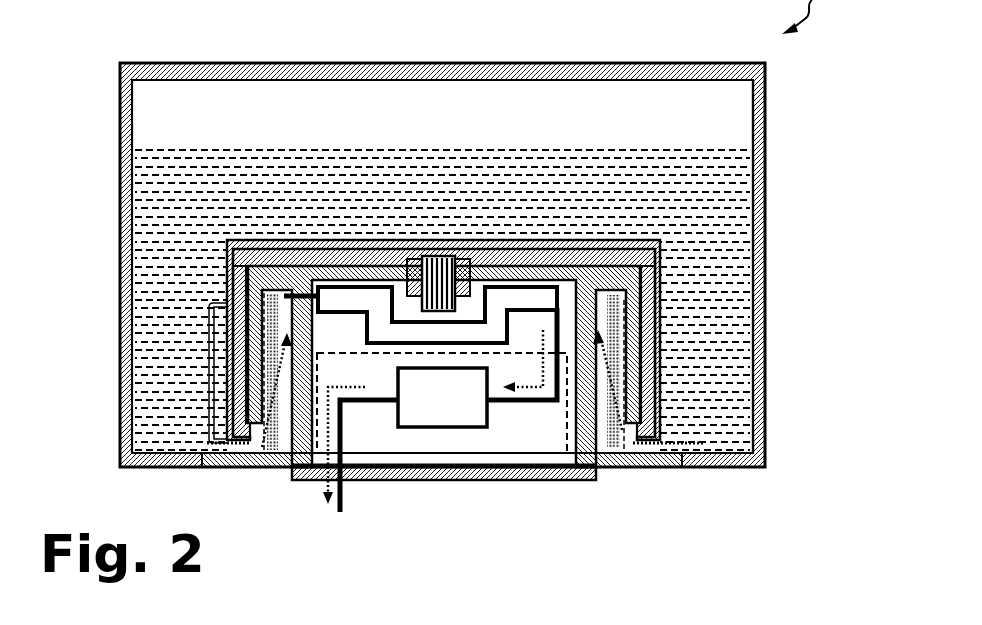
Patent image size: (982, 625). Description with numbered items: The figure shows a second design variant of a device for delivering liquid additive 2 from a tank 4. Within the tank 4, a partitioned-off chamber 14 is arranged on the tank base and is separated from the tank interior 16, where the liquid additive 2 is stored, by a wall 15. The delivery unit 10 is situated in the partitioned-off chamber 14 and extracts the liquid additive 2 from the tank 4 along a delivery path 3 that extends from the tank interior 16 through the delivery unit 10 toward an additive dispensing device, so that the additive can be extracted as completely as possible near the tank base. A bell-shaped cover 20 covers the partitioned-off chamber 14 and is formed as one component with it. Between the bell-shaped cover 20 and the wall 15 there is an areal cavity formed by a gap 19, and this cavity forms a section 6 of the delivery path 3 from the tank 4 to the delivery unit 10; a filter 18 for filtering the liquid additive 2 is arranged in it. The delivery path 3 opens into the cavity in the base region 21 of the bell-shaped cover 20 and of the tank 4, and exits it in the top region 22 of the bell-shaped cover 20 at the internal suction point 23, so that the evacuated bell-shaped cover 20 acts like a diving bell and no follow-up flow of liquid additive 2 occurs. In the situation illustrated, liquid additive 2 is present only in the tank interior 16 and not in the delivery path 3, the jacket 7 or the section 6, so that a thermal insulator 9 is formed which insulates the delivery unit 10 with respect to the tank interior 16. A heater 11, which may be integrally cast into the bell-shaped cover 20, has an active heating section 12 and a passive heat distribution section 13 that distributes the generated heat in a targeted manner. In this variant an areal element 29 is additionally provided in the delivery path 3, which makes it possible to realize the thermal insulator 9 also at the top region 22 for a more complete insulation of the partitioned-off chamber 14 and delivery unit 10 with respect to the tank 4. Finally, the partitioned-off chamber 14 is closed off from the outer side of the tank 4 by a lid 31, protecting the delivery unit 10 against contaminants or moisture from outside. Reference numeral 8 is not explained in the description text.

The liquid additive 2 is at (661, 165).
The delivery path 3 is at (378, 256).
The tank 4 is at (124, 63).
The section 6 is at (210, 373).
The jacket 7 is at (623, 463).
The electrode tab 8 is at (287, 335).
The thermal insulator 9 is at (543, 296).
The delivery unit 10 is at (505, 456).
The heater 11 is at (587, 256).
The active heating section 12 is at (441, 256).
The passive heat distribution section 13 is at (648, 242).
The partitioned-off chamber 14 is at (372, 462).
The wall 15 is at (597, 388).
The tank interior 16 is at (742, 138).
The filter 18 is at (273, 452).
The gap 19 is at (606, 400).
The bell-shaped cover 20 is at (660, 332).
The base region 21 is at (625, 462).
The top region 22 is at (615, 276).
The internal suction point 23 is at (298, 253).
The areal element 29 is at (527, 283).
The lid 31 is at (465, 482).